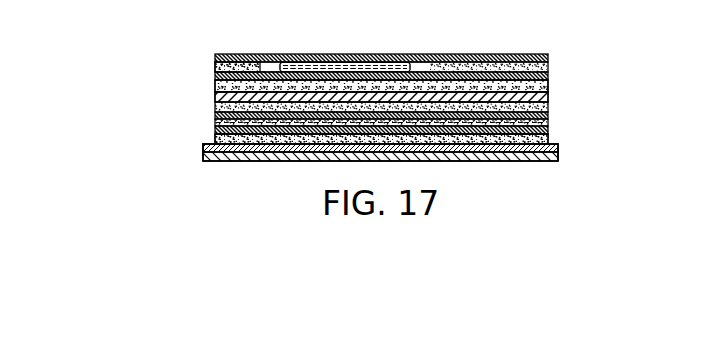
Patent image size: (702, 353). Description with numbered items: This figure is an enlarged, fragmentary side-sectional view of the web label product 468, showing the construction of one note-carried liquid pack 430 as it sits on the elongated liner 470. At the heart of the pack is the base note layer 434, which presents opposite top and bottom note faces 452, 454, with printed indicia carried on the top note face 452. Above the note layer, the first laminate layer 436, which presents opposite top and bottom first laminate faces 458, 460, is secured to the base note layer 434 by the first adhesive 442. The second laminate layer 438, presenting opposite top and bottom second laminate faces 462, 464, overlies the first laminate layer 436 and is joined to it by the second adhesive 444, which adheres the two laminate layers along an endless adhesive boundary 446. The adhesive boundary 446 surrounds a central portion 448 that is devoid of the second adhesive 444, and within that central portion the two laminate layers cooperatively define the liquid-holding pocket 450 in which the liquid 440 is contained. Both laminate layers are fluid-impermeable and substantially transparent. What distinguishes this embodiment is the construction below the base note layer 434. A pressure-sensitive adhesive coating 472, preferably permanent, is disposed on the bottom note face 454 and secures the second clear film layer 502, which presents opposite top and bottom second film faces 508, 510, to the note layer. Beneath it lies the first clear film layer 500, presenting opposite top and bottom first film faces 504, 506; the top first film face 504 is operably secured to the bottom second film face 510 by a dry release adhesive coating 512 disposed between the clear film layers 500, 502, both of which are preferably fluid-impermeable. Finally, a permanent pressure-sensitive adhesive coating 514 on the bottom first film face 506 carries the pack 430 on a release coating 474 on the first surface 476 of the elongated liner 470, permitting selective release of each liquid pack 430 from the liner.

The note-carried liquid pack 430 is at (551, 44).
The base note layer 434 is at (503, 96).
The first laminate layer 436 is at (453, 100).
The second laminate layer 438 is at (549, 58).
The liquid 440 is at (317, 64).
The first adhesive 442 is at (549, 77).
The second adhesive 444 is at (549, 68).
The adhesive boundary 446 is at (270, 68).
The central portion 448 is at (420, 65).
The liquid-holding pocket 450 is at (276, 67).
The top note face 452 is at (276, 82).
The bottom note face 454 is at (240, 104).
The top first laminate face 458 is at (232, 70).
The bottom first laminate face 460 is at (240, 90).
The top second laminate face 462 is at (370, 70).
The bottom second laminate face 464 is at (372, 70).
The web label product 468 is at (201, 54).
The elongated liner 470 is at (552, 163).
The pressure-sensitive adhesive coating 472 is at (549, 87).
The rigid base plate 474 is at (559, 151).
The first surface 476 is at (519, 147).
The first clear film layer 500 is at (235, 132).
The second clear film layer 502 is at (240, 121).
The top first film face 504 is at (452, 117).
The bottom first film face 506 is at (432, 126).
The top second film face 508 is at (316, 103).
The bottom second film face 510 is at (340, 118).
The dry release adhesive coating 512 is at (549, 116).
The permanent pressure-sensitive adhesive coating 514 is at (549, 140).